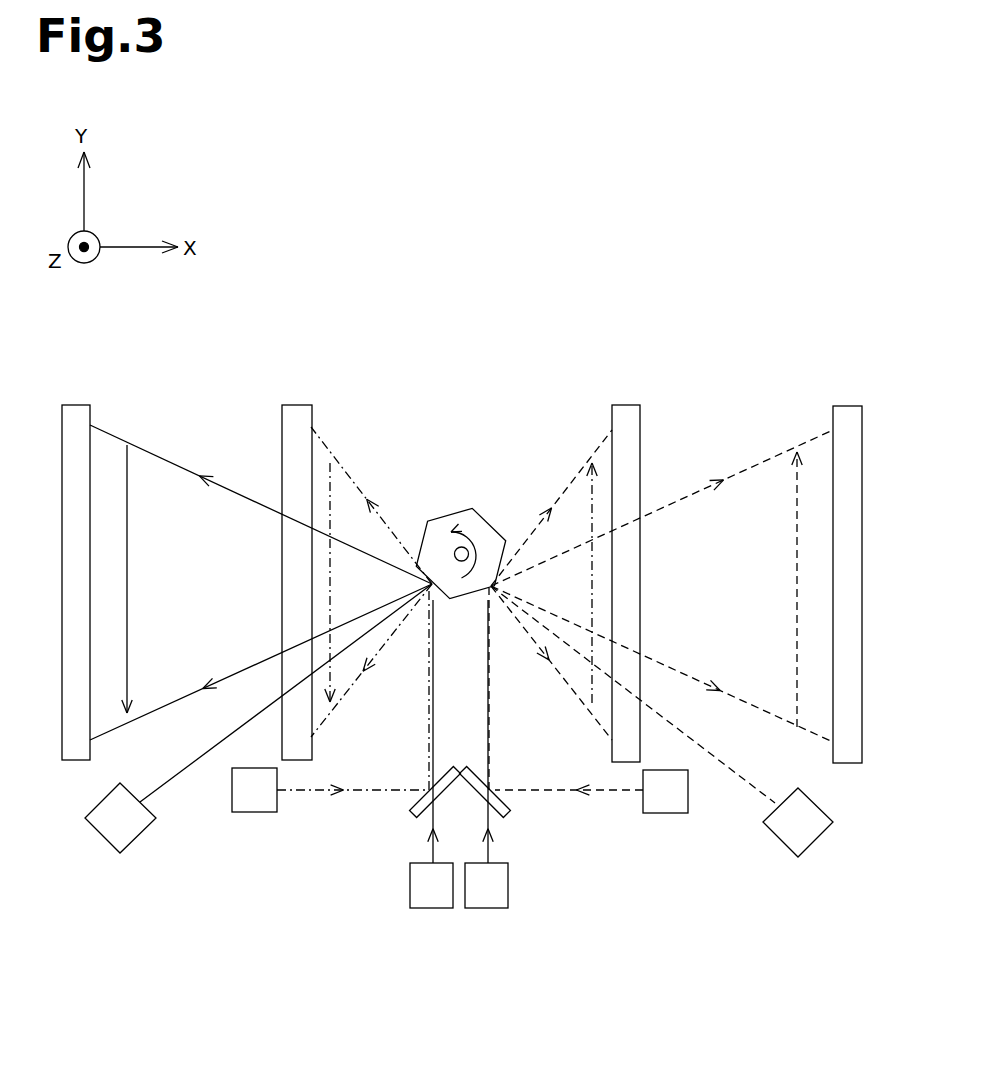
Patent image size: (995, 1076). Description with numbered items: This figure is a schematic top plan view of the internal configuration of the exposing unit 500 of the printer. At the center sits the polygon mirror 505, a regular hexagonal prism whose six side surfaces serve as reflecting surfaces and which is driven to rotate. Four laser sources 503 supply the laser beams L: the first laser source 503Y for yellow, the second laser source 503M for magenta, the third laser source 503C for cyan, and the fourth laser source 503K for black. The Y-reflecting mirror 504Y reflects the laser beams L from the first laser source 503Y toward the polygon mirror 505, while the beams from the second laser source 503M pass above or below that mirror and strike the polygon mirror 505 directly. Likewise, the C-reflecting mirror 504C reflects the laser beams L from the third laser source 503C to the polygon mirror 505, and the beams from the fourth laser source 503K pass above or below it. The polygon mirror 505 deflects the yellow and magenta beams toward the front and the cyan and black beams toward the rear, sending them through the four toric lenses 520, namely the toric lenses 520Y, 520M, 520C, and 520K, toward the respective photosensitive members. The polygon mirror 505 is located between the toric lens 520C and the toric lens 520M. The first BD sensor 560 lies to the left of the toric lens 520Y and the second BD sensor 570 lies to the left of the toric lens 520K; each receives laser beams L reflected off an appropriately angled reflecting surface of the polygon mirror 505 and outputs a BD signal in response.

The exposing unit 500 is at (740, 282).
The polygon mirror 505 is at (443, 513).
The toric lenses 520 is at (457, 549).
The toric lens 520K is at (80, 405).
The toric lens 520C is at (300, 405).
The toric lens 520M is at (623, 405).
The toric lens 520Y is at (870, 358).
The laser sources 503 is at (460, 872).
The fourth laser source 503K is at (430, 908).
The third laser source 503C is at (252, 812).
The second laser source 503M is at (488, 908).
The first laser source 503Y is at (668, 813).
The C-reflecting mirror 504C is at (450, 769).
The Y-reflecting mirror 504Y is at (470, 769).
The second BD sensor 570 is at (103, 843).
The first BD sensor 560 is at (812, 847).
The laser beams L is at (380, 790).